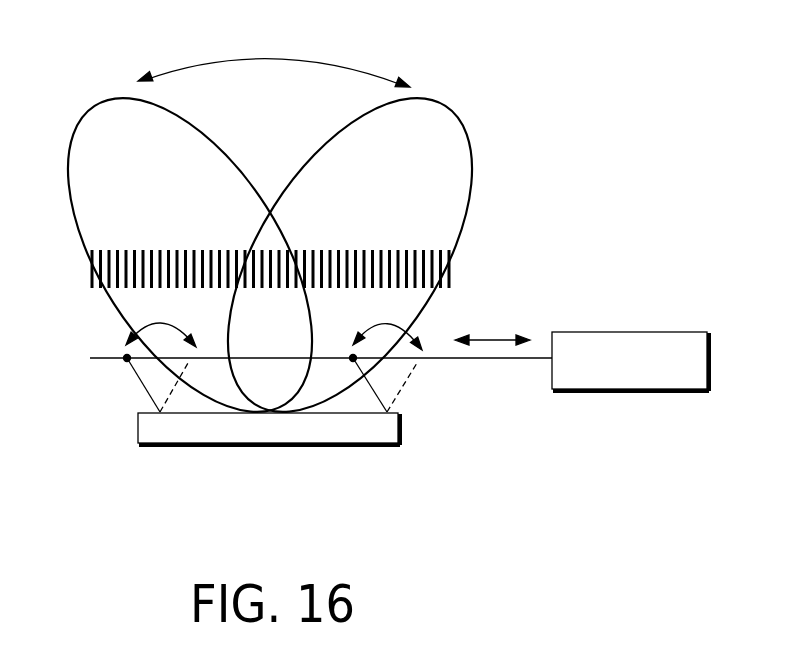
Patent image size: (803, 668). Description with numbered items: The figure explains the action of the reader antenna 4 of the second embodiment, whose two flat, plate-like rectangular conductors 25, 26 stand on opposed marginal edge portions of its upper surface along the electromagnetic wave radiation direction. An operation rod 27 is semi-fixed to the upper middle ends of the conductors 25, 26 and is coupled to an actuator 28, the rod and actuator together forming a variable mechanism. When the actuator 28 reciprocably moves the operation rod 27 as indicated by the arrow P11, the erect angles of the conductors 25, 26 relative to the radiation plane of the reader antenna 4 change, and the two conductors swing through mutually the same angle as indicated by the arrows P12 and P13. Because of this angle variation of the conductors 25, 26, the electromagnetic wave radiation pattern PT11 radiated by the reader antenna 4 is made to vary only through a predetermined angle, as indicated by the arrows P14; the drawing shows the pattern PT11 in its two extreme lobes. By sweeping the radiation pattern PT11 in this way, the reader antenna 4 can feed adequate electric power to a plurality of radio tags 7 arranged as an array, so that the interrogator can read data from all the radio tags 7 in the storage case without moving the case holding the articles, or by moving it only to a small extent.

The electromagnetic wave radiation pattern PT11 is at (466, 127).
The radio tags 7 is at (93, 272).
The arrows indicating radiation pattern variation P14 is at (278, 57).
The arrow indicating conductor swing P12 is at (148, 322).
The arrow indicating conductor swing P13 is at (390, 324).
The arrow indicating operation rod reciprocation P11 is at (500, 337).
The operation rod 27 is at (505, 362).
The actuator 28 is at (707, 363).
The conductor 25 is at (138, 380).
The conductor 26 is at (367, 400).
The reader antenna 4 is at (265, 433).